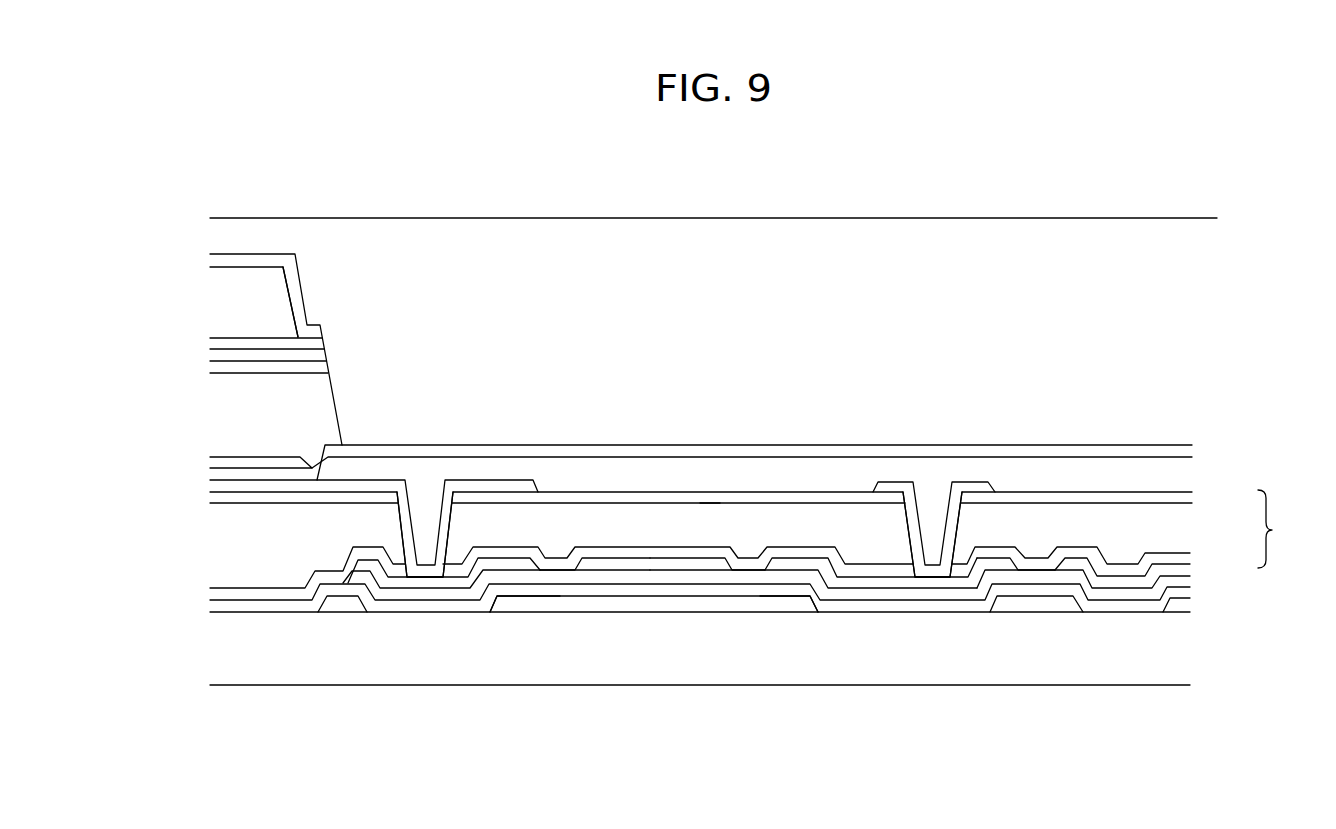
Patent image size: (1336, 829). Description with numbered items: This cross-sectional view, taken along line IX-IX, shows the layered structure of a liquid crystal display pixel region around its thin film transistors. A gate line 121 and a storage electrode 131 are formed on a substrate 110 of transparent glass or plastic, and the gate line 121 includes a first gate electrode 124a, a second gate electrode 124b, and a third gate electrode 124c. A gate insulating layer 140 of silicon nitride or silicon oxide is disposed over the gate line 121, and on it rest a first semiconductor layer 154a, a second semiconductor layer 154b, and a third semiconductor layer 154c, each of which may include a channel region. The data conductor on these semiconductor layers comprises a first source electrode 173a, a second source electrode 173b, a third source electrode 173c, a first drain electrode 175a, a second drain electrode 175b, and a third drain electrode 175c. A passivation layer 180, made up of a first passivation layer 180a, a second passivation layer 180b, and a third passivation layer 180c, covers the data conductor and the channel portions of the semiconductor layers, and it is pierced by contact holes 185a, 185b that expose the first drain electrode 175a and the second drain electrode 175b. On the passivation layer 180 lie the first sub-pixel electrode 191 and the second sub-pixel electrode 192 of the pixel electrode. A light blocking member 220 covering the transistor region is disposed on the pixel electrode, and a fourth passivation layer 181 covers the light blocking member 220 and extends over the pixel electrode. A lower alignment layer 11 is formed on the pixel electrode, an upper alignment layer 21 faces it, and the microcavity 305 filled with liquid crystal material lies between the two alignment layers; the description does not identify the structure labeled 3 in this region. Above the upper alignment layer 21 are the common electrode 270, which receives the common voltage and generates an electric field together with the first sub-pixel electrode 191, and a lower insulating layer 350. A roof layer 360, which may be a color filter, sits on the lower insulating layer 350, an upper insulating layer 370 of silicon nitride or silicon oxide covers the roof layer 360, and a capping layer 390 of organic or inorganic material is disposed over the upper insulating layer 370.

The upper display panel substrate 3 is at (218, 428).
The lower alignment layer 11 is at (218, 463).
The upper alignment layer 21 is at (222, 368).
The substrate 110 is at (414, 668).
The gate line 121 is at (658, 603).
The first gate electrode 124a is at (518, 603).
The second gate electrode 124b is at (786, 603).
The third gate electrode 124c is at (1060, 603).
The storage electrode 131 is at (345, 605).
The gate insulating layer 140 is at (932, 603).
The first semiconductor layer 154a is at (556, 583).
The second semiconductor layer 154b is at (745, 578).
The third semiconductor layer 154c is at (1030, 576).
The first source electrode 173a is at (610, 563).
The second source electrode 173b is at (703, 563).
The third source electrode 173c is at (1000, 563).
The first drain electrode 175a is at (497, 562).
The second drain electrode 175b is at (868, 582).
The third drain electrode 175c is at (1082, 583).
The passivation layer 180 is at (1280, 529).
The first passivation layer 180a is at (1183, 562).
The second passivation layer 180b is at (1183, 530).
The third passivation layer 180c is at (1183, 500).
The fourth passivation layer 181 is at (1182, 447).
The contact hole 185a is at (426, 492).
The contact hole 185b is at (935, 492).
The first sub-pixel electrode 191 is at (502, 487).
The second sub-pixel electrode 192 is at (888, 487).
The light blocking member 220 is at (1183, 473).
The common electrode 270 is at (218, 353).
The microcavity 305 is at (268, 416).
The lower insulating layer 350 is at (222, 345).
The roof layer 360 is at (218, 300).
The upper insulating layer 370 is at (217, 259).
The capping layer 390 is at (770, 240).